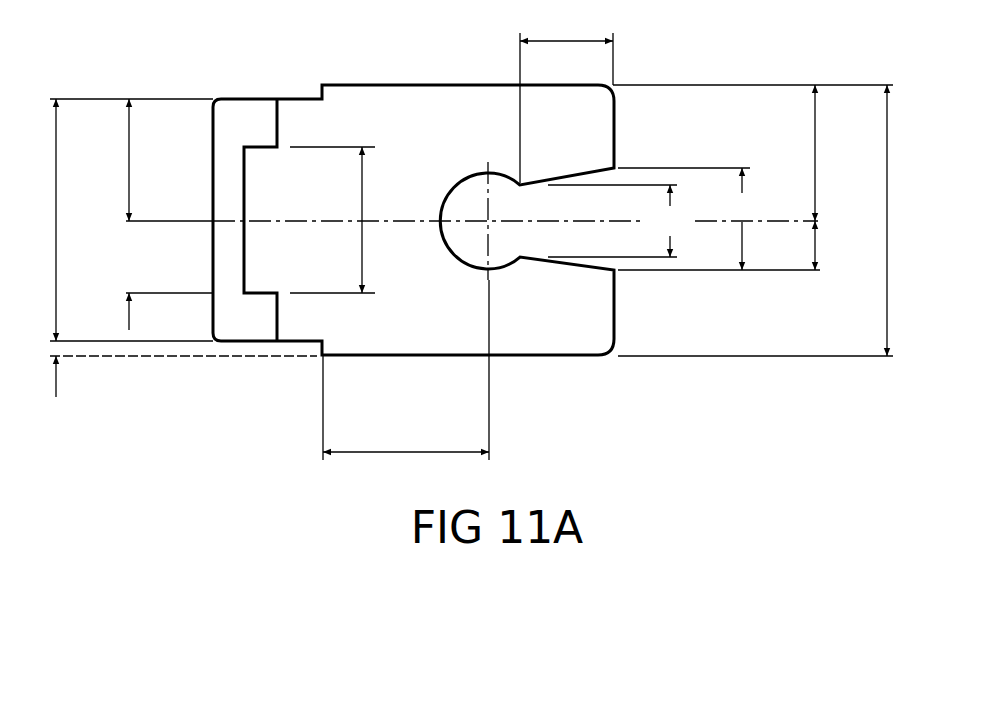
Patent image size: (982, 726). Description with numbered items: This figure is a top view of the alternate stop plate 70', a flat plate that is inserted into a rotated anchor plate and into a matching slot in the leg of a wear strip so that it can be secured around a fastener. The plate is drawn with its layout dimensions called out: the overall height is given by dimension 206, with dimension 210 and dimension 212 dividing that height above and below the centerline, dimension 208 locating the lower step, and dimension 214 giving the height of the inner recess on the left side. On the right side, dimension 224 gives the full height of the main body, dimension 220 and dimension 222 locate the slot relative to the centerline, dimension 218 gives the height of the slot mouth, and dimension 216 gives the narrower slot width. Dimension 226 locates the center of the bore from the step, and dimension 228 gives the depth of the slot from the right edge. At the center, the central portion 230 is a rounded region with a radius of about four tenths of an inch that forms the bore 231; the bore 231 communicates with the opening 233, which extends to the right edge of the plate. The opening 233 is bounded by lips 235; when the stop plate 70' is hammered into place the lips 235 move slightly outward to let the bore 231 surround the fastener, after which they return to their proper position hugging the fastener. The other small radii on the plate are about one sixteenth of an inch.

The stop plate 70' is at (472, 196).
The dimension 206 is at (123, 220).
The dimension 208 is at (175, 392).
The dimension 210 is at (130, 160).
The dimension 212 is at (159, 286).
The dimension 214 is at (338, 220).
The dimension 216 is at (621, 221).
The dimension 218 is at (719, 219).
The dimension 220 is at (753, 153).
The dimension 222 is at (815, 263).
The dimension 224 is at (765, 220).
The dimension 226 is at (406, 370).
The dimension 228 is at (566, 97).
The central portion 230 is at (466, 265).
The bore 231 is at (466, 182).
The opening 233 is at (518, 211).
The lips 235 is at (521, 182).